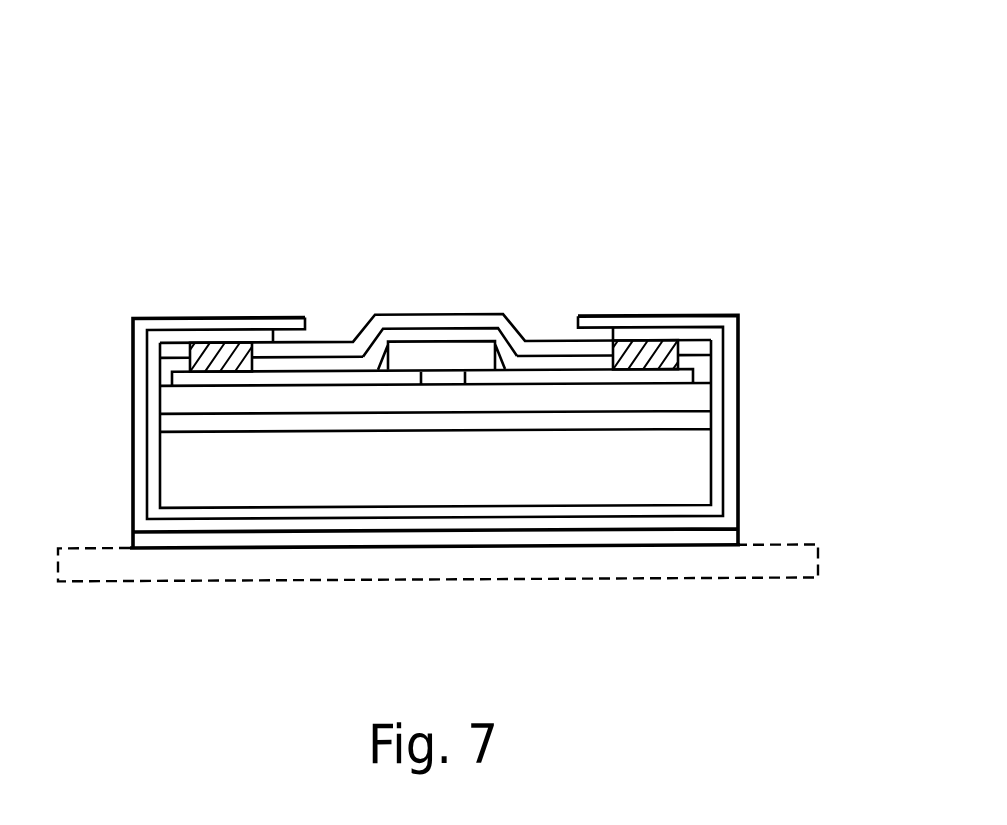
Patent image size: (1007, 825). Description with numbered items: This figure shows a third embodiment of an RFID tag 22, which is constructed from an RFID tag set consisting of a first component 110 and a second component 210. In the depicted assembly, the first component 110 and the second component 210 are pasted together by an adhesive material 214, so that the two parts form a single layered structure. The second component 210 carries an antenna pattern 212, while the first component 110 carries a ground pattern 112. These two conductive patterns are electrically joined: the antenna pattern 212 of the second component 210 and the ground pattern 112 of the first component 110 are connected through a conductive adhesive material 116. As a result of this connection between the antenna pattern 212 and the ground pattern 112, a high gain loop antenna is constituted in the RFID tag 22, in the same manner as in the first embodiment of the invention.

The RFID tag 22 is at (556, 138).
The first component 110 is at (775, 456).
The ground pattern 112 is at (150, 448).
The conductive adhesive material 116 is at (206, 343).
The second component 210 is at (440, 264).
The antenna pattern 212 is at (322, 381).
The adhesive material 214 is at (536, 422).